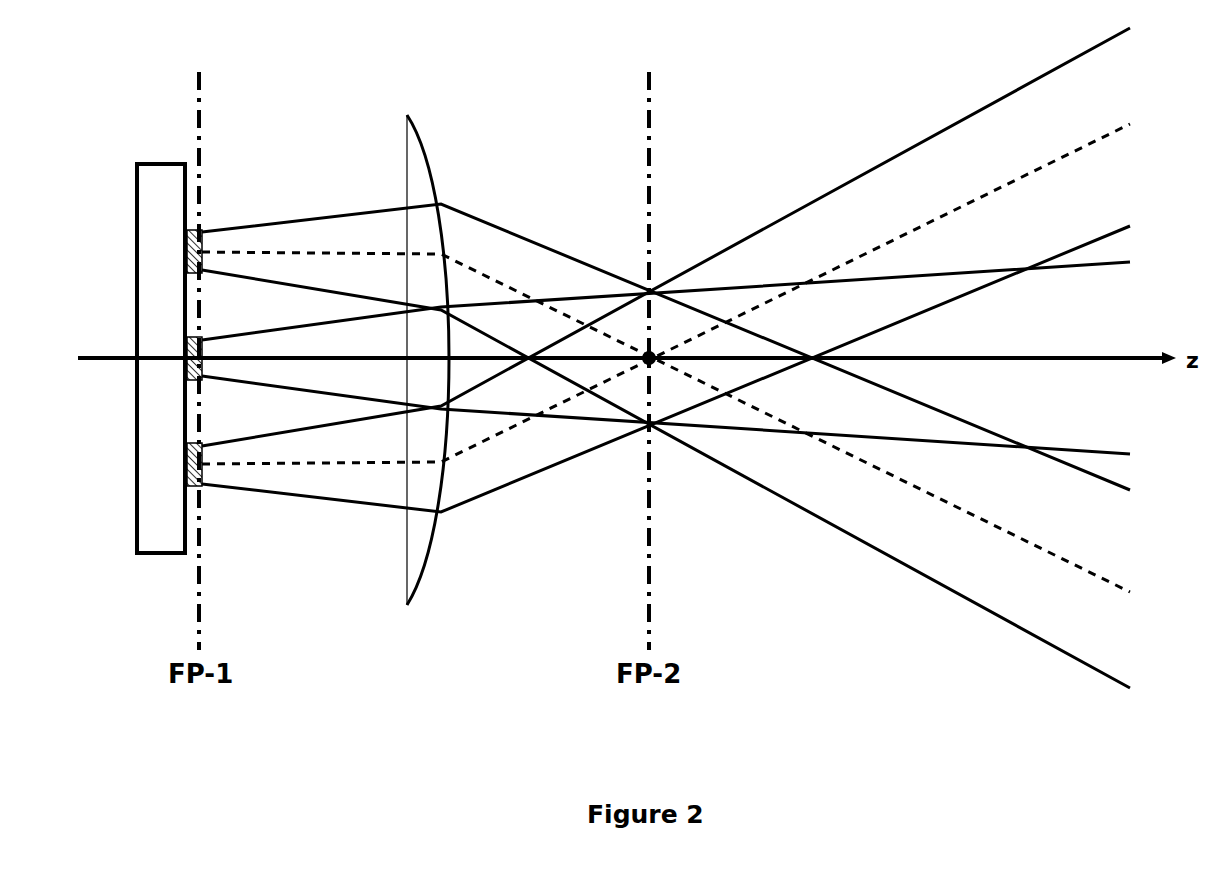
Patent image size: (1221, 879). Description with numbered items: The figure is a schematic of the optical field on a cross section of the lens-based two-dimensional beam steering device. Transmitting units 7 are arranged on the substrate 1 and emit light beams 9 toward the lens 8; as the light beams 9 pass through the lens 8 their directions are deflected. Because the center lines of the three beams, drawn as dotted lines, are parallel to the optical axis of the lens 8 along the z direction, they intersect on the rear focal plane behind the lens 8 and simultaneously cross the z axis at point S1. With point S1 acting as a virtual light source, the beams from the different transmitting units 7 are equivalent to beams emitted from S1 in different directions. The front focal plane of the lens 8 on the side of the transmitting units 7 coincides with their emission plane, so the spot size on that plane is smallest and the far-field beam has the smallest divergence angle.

The substrate 1 is at (133, 188).
The transmitting units 7 is at (191, 236).
The lens 8 is at (432, 143).
The light beams 9 is at (297, 218).
The point S1 (virtual light source) S1 is at (658, 370).